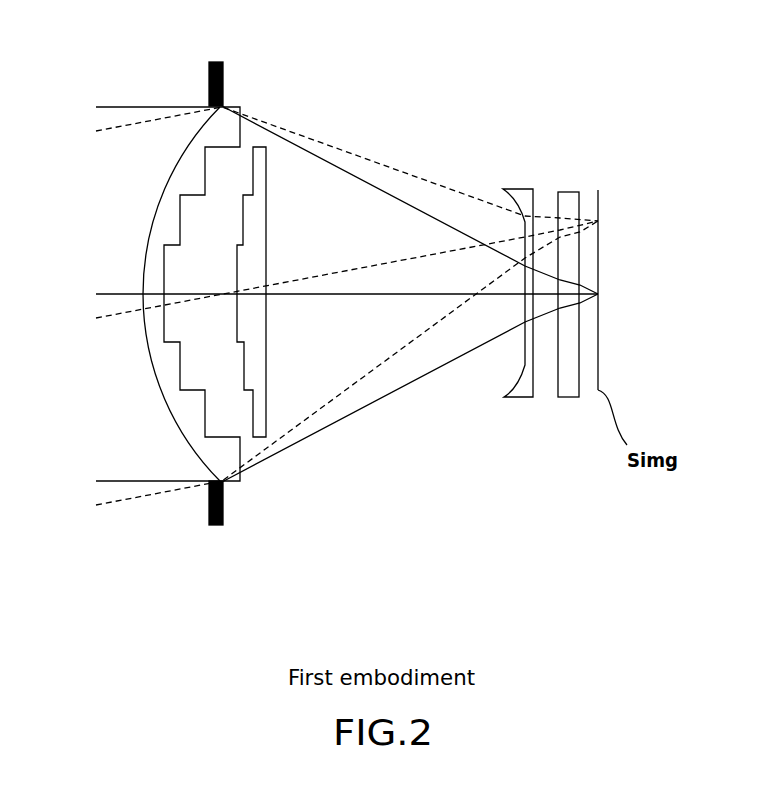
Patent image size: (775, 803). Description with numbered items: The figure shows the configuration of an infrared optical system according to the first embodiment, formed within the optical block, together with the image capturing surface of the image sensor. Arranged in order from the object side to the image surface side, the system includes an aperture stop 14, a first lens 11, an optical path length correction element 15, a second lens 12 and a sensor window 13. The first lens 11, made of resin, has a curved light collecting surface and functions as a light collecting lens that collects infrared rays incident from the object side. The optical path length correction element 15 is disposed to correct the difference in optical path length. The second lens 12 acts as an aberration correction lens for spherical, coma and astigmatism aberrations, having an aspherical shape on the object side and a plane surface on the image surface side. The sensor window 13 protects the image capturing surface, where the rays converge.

The first lens 11 is at (217, 132).
The second lens 12 is at (525, 193).
The sensor window 13 is at (567, 198).
The aperture stop 14 is at (209, 73).
The optical path length correction element 15 is at (260, 402).